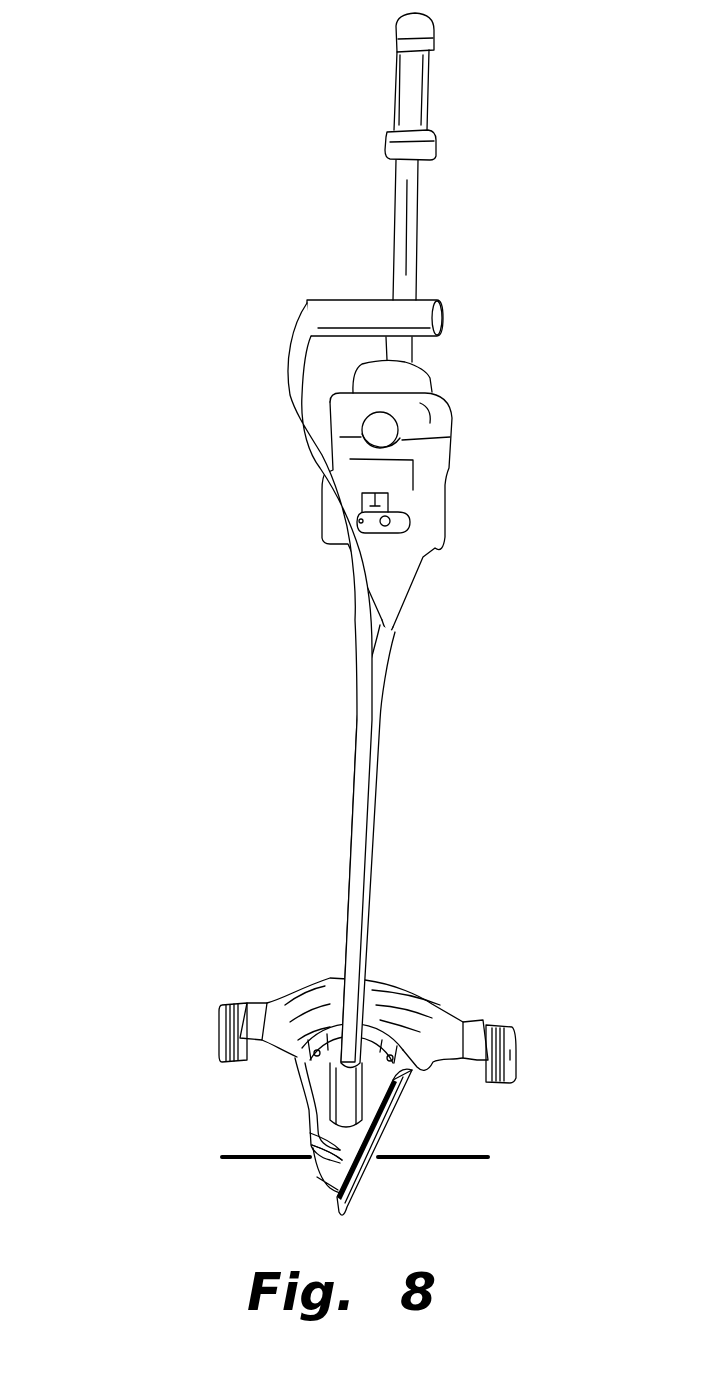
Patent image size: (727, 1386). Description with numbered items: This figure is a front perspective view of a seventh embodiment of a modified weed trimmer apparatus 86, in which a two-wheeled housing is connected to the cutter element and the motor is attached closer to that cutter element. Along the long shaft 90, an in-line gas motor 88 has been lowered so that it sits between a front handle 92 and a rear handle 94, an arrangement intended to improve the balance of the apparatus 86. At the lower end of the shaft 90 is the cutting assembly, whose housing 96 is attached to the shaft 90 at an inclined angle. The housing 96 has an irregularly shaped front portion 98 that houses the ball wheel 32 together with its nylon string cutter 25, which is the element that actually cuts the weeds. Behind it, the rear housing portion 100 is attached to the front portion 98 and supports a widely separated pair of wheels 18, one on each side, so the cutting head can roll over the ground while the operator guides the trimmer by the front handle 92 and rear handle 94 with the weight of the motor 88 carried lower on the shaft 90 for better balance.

The wheels 18 is at (222, 1002).
The nylon string cutter 25 is at (440, 1160).
The ball wheel 32 is at (314, 1160).
The modified weed trimmer apparatus 86 is at (394, 534).
The in-line gas motor 88 is at (427, 477).
The shaft 90 is at (379, 728).
The front handle 92 is at (336, 300).
The rear handle 94 is at (430, 83).
The housing 96 is at (312, 1013).
The front portion 98 is at (372, 1093).
The rear housing portion 100 is at (395, 985).